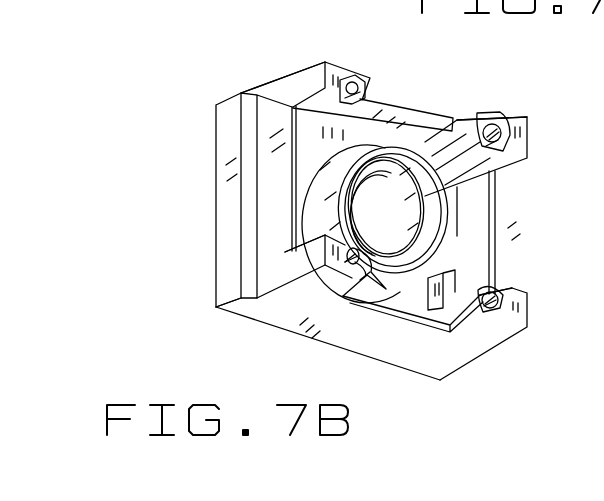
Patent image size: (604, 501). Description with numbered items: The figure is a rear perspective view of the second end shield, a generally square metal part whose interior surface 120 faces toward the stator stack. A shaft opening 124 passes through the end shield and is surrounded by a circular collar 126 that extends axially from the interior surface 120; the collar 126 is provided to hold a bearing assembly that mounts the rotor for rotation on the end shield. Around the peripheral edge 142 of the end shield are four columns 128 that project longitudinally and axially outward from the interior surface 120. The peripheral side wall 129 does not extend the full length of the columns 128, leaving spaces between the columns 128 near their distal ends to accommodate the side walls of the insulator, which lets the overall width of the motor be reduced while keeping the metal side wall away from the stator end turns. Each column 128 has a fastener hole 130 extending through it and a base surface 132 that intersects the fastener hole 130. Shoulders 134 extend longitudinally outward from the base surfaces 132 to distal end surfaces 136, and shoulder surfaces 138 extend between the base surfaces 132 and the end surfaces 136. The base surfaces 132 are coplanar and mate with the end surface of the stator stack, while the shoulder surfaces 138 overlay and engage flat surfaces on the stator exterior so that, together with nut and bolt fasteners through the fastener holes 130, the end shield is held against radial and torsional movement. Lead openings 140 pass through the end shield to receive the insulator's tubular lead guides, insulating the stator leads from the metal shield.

The interior surface 120 is at (452, 233).
The shaft opening 124 is at (385, 184).
The circular collar 126 is at (318, 192).
The columns 128 is at (278, 88).
The peripheral side wall 129 is at (272, 158).
The fastener hole 130 is at (343, 83).
The base surface 132 is at (362, 100).
The shoulders 134 is at (325, 62).
The distal end surfaces 136 is at (297, 117).
The shoulder surfaces 138 is at (372, 78).
The lead openings 140 is at (443, 292).
The peripheral edge 142 is at (238, 305).